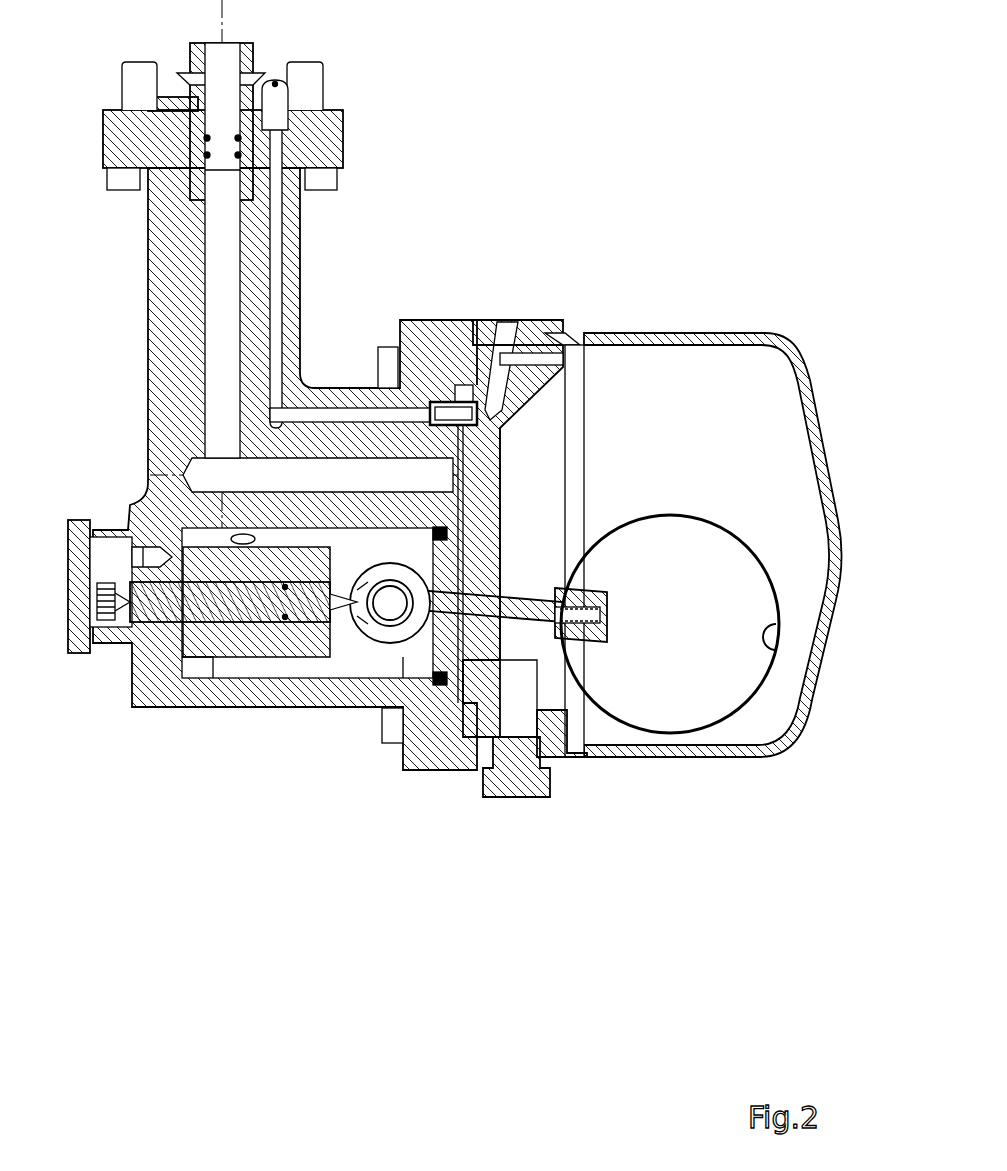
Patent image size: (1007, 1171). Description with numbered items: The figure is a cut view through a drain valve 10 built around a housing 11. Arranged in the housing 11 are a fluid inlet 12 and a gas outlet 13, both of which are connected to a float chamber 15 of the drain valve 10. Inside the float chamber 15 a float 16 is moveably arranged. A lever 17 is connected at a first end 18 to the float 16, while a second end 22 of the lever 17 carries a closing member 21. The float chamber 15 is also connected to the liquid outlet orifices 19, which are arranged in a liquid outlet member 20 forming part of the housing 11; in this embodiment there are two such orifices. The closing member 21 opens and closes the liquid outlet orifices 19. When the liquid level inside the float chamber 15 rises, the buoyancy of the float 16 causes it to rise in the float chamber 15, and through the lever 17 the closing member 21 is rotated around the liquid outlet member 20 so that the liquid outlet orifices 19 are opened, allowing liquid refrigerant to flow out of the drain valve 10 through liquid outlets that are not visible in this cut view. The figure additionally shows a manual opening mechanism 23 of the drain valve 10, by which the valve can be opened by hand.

The drain valve 10 is at (656, 252).
The housing 11 is at (347, 703).
The fluid inlet 12 is at (213, 258).
The gas outlet 13 is at (270, 247).
The float chamber 15 is at (728, 418).
The float 16 is at (693, 688).
The lever 17 is at (505, 607).
The first end 18 is at (573, 640).
The liquid outlet orifice 19 is at (395, 645).
The liquid outlet member 20 is at (383, 582).
The closing member 21 is at (397, 575).
The second end 22 is at (457, 640).
The manual opening mechanism 23 is at (150, 602).